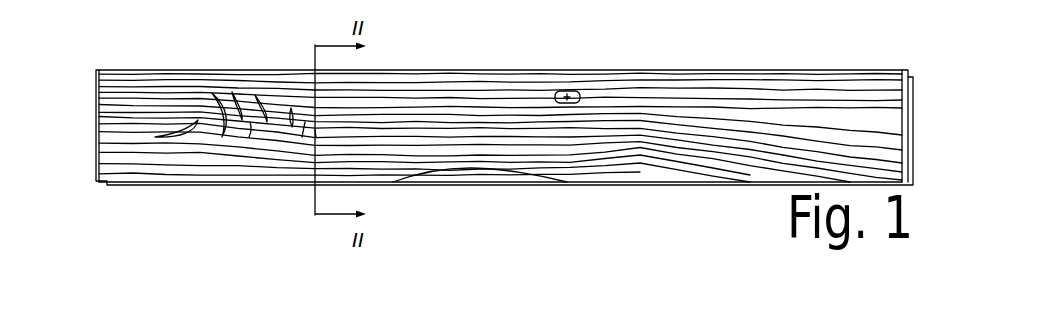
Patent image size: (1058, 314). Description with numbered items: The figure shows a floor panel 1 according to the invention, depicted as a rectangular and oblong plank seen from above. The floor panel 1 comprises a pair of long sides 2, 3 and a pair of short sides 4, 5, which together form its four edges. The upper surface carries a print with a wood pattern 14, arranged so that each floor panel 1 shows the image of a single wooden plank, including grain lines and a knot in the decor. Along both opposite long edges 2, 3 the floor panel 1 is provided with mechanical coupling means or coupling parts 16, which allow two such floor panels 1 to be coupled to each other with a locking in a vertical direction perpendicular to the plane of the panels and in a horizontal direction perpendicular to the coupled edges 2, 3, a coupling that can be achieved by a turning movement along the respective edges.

The floor panel 1 is at (198, 200).
The long side 2 is at (462, 66).
The long side 3 is at (456, 190).
The short side 4 is at (96, 175).
The short side 5 is at (918, 181).
The wood pattern 14 is at (627, 84).
The mechanical coupling means 16 is at (97, 89).